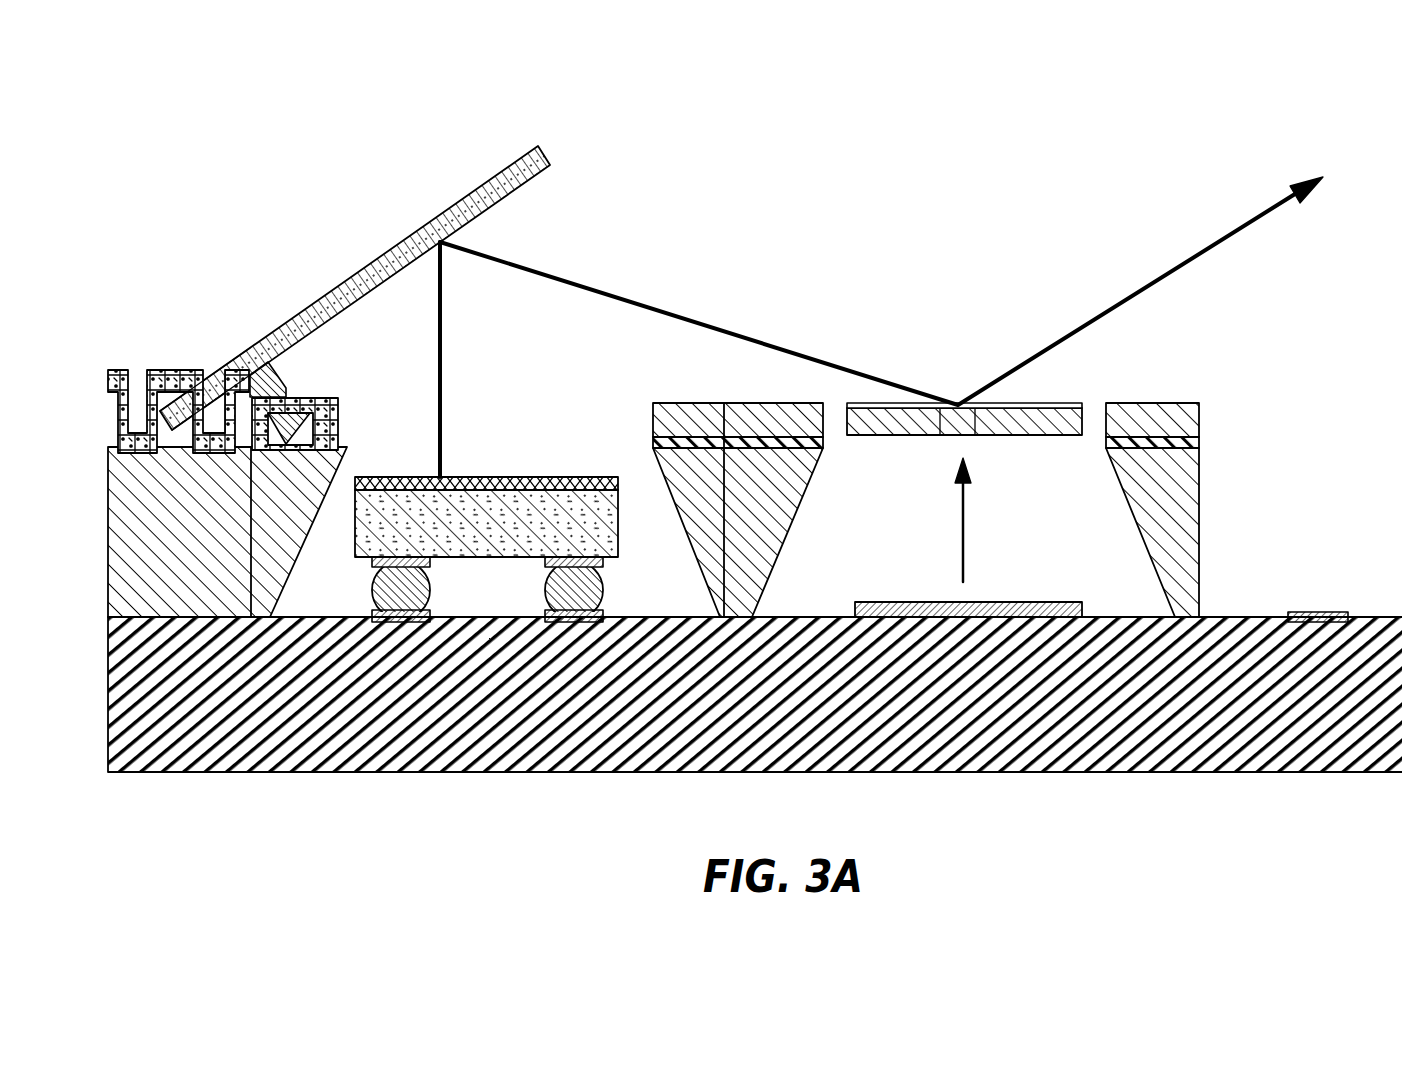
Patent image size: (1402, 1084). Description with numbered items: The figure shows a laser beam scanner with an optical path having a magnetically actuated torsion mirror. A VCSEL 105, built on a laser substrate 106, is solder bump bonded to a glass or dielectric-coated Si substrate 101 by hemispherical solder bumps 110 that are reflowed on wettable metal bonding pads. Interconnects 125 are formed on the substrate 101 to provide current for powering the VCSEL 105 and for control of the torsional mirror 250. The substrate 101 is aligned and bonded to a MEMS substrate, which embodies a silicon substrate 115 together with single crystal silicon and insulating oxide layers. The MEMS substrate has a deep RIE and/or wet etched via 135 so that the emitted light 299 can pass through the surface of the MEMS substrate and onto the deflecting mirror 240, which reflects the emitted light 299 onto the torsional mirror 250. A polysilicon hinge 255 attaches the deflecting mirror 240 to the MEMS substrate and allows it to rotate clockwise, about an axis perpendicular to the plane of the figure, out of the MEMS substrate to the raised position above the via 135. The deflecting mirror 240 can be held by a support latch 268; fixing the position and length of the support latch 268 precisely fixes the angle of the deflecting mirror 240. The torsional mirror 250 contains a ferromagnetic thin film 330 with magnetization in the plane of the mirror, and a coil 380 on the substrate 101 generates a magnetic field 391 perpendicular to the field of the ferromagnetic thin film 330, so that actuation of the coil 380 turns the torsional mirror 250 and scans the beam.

The glass or dielectric-coated Si substrate 101 is at (802, 773).
The VCSEL 105 is at (510, 514).
The laser substrate 106 is at (618, 515).
The solder bumps 110 is at (430, 594).
The silicon substrate 115 is at (108, 480).
The interconnects 125 is at (1316, 610).
The via 135 is at (644, 482).
The deflecting mirror 240 is at (338, 284).
The torsional mirror 250 is at (1020, 436).
The polysilicon hinge 255 is at (166, 370).
The support latch 268 is at (284, 380).
The emitted light 299 is at (443, 370).
The ferromagnetic thin film 330 is at (1045, 403).
The coil 380 is at (892, 602).
The magnetic field 391 is at (963, 515).